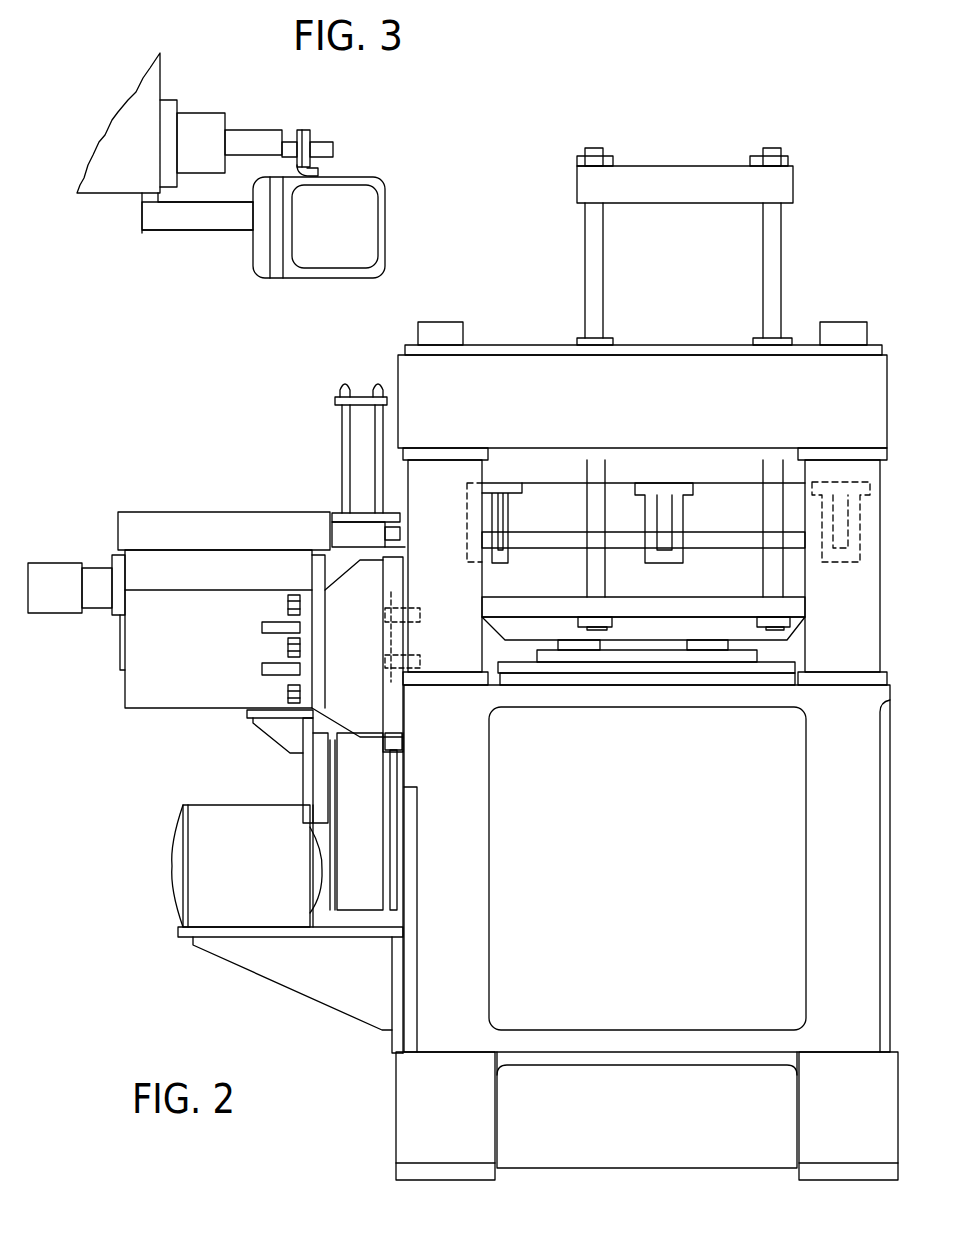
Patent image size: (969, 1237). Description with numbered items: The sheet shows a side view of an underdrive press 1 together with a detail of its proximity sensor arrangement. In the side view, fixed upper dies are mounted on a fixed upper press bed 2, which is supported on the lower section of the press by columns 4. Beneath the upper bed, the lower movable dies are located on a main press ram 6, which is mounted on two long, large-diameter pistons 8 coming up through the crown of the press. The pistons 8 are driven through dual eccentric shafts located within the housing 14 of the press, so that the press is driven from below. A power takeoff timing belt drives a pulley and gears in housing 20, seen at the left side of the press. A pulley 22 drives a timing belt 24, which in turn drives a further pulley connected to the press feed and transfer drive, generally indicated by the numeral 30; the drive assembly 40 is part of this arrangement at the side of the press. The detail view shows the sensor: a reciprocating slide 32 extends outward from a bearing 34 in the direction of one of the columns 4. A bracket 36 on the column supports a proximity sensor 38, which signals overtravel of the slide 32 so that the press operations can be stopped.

In FIG. 2, the underdrive press 1 is at (902, 910).
In FIG. 2, the fixed upper press bed 2 is at (858, 405).
In FIG. 3, the columns 4 is at (337, 278).
In FIG. 2, the columns 4 is at (468, 473).
In FIG. 2, the main press ram 6 is at (702, 610).
In FIG. 2, the pistons 8 is at (707, 647).
In FIG. 2, the housing 14 is at (843, 754).
In FIG. 2, the housing 20 is at (250, 810).
In FIG. 2, the pulley 22 is at (398, 887).
In FIG. 2, the timing belt 24 is at (367, 783).
In FIG. 3, the press feed and transfer drive 30 is at (137, 203).
In FIG. 2, the press feed and transfer drive 30 is at (116, 692).
In FIG. 3, the reciprocating slide 32 is at (247, 143).
In FIG. 3, the bearing 34 is at (192, 128).
In FIG. 3, the bracket 36 is at (318, 173).
In FIG. 3, the proximity sensor 38 is at (325, 147).
In FIG. 2, the gear housing 40 is at (208, 682).